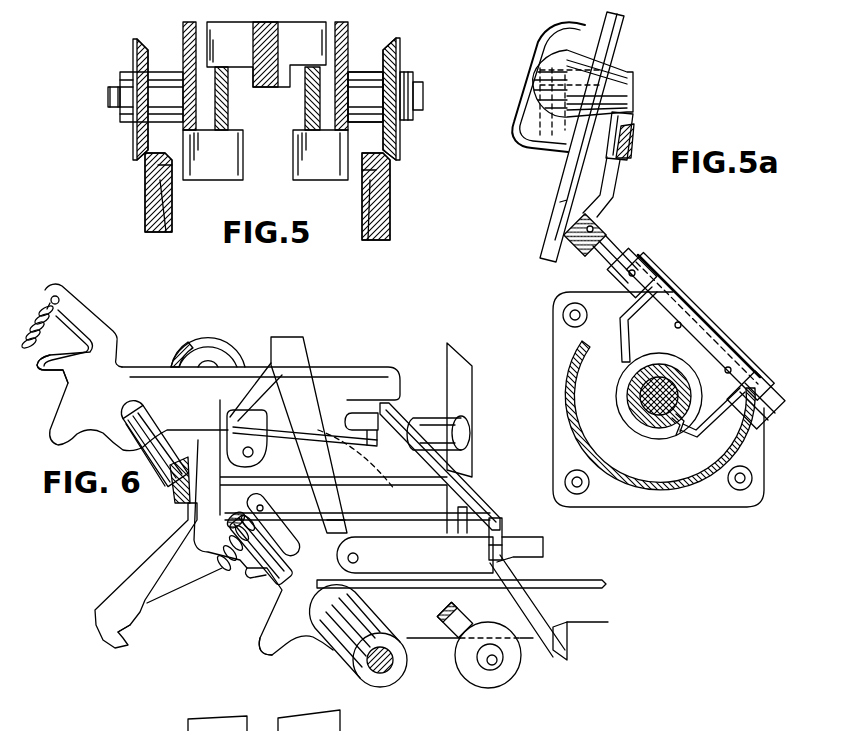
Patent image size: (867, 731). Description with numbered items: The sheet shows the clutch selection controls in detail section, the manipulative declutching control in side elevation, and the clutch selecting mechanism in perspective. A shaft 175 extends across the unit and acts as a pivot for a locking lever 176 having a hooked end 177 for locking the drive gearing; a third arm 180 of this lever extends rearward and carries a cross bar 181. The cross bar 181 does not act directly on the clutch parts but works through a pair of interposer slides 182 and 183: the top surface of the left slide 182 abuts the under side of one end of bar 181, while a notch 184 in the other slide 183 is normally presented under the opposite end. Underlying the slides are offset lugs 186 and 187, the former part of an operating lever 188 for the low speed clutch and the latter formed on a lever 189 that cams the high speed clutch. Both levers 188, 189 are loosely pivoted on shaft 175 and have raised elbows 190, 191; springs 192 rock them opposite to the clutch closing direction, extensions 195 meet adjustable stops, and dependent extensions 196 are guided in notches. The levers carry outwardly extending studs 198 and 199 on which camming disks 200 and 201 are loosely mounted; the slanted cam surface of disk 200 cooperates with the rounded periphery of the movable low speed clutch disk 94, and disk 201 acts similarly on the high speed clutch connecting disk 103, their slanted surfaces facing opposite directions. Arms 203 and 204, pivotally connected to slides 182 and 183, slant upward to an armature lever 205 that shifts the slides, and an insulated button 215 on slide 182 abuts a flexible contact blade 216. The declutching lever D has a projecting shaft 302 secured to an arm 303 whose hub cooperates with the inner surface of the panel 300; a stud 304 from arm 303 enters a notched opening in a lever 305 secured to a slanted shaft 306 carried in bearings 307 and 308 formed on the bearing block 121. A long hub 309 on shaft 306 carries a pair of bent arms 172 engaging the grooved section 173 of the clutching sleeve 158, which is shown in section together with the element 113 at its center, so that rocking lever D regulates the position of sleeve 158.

In FIG. 5, the movable clutch disk 94 is at (148, 182).
In FIG. 5, the clutch connecting disk 103 is at (390, 177).
In FIG. 5a, the shaft 113 is at (650, 400).
In FIG. 5a, the bearing block 121 is at (680, 490).
In FIG. 5a, the connecting sleeve 158 is at (655, 425).
In FIG. 5a, the arm 172 is at (677, 300).
In FIG. 5a, the circular groove 173 is at (678, 437).
In FIG. 6, the shaft 175 is at (380, 673).
In FIG. 6, the locking lever 176 is at (167, 553).
In FIG. 6, the hooked end 177 is at (112, 637).
In FIG. 5, the third arm 180 is at (262, 43).
In FIG. 6, the third arm 180 is at (377, 500).
In FIG. 5, the cross bar 181 is at (348, 33).
In FIG. 6, the cross bar 181 is at (455, 467).
In FIG. 5, the interposer slide 182 is at (228, 102).
In FIG. 6, the interposer slide 182 is at (283, 447).
In FIG. 5, the interposer slide 183 is at (305, 105).
In FIG. 6, the interposer slide 183 is at (415, 555).
In FIG. 6, the notch 184 is at (505, 545).
In FIG. 5, the offset lug 186 is at (222, 165).
In FIG. 6, the offset lug 186 is at (373, 417).
In FIG. 5, the offset lug 187 is at (312, 165).
In FIG. 6, the offset lug 187 is at (513, 572).
In FIG. 5, the operating lever 188 is at (183, 33).
In FIG. 6, the operating lever 188 is at (320, 377).
In FIG. 5, the lever 189 is at (348, 58).
In FIG. 6, the lever 189 is at (425, 633).
In FIG. 6, the raised elbow 190 is at (90, 320).
In FIG. 6, the raised elbow 191 is at (300, 530).
In FIG. 6, the spring 192 is at (45, 303).
In FIG. 6, the extension 195 is at (55, 370).
In FIG. 6, the dependent extension 196 is at (260, 645).
In FIG. 5, the stud 198 is at (108, 93).
In FIG. 5, the stud 199 is at (423, 92).
In FIG. 5, the camming disk 200 is at (135, 160).
In FIG. 6, the camming disk 200 is at (195, 340).
In FIG. 5, the cam disk 201 is at (400, 143).
In FIG. 6, the cam disk 201 is at (492, 682).
In FIG. 6, the arm 203 is at (243, 400).
In FIG. 6, the arm 204 is at (313, 417).
In FIG. 6, the armature lever 205 is at (292, 345).
In FIG. 6, the insulated button 215 is at (455, 432).
In FIG. 6, the flexible contact blade 216 is at (460, 390).
In FIG. 5a, the panel 300 is at (572, 167).
In FIG. 5a, the projecting shaft 302 is at (620, 75).
In FIG. 5a, the arm 303 is at (625, 118).
In FIG. 5a, the stud 304 is at (636, 140).
In FIG. 5a, the lever 305 is at (615, 177).
In FIG. 5a, the slanted shaft 306 is at (605, 243).
In FIG. 5a, the bearing 307 is at (652, 280).
In FIG. 5a, the bearing 308 is at (765, 380).
In FIG. 5a, the long hub 309 is at (715, 330).
In FIG. 5a, the declutching lever D is at (560, 45).